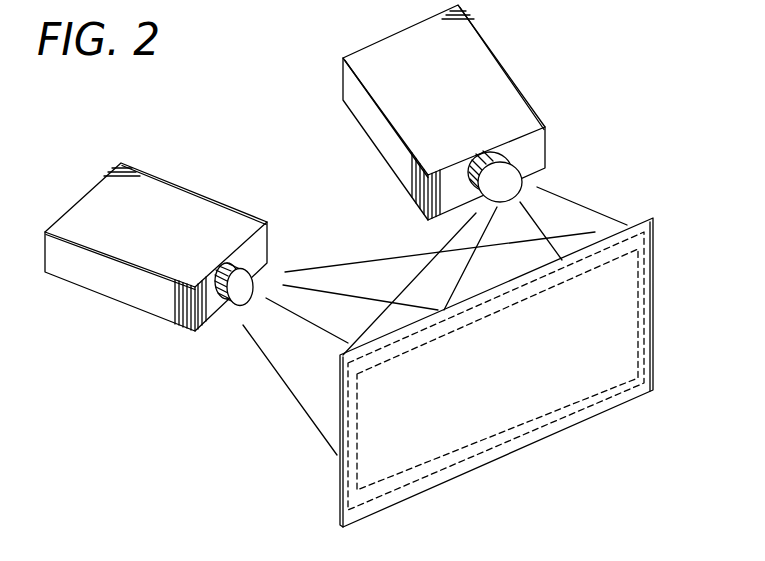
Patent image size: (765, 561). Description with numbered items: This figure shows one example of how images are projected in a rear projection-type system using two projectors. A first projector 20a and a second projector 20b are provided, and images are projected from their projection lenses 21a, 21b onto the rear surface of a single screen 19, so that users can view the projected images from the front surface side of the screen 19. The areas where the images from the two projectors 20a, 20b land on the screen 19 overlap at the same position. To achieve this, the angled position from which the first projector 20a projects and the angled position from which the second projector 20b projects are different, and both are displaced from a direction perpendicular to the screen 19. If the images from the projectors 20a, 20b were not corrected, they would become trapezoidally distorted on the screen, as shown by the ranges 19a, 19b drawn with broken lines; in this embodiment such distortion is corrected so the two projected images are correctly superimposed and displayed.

The screen 19 is at (655, 307).
The range 19a is at (410, 351).
The range 19b is at (570, 279).
The first projector 20a is at (102, 282).
The second projector 20b is at (497, 80).
The projection lens 21a is at (210, 308).
The projection lens 21b is at (503, 177).